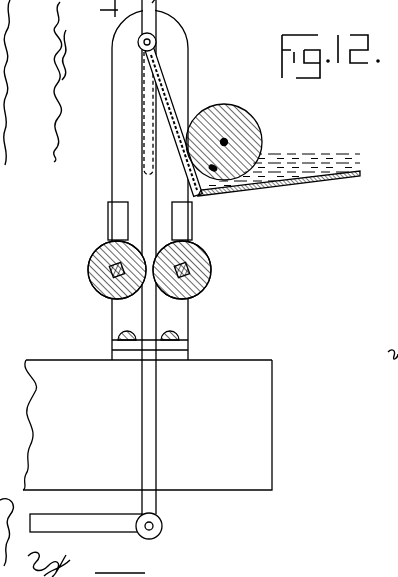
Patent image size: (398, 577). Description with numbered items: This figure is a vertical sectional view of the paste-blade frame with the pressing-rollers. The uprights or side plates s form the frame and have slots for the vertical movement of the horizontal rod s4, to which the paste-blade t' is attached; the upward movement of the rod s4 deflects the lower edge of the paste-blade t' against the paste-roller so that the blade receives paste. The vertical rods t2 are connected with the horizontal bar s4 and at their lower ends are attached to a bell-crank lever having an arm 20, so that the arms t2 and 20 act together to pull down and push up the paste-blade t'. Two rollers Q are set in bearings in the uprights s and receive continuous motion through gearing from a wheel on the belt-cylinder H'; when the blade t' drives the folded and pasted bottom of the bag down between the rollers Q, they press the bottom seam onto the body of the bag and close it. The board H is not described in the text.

The horizontal rod s4 is at (156, 45).
The upright s is at (166, 70).
The paste-blade t' is at (176, 91).
The vertical rod t2 is at (153, 425).
The board / bed H is at (279, 180).
The belt-cylinder H' is at (232, 142).
The roller Q is at (90, 272).
The arm 20 is at (60, 528).